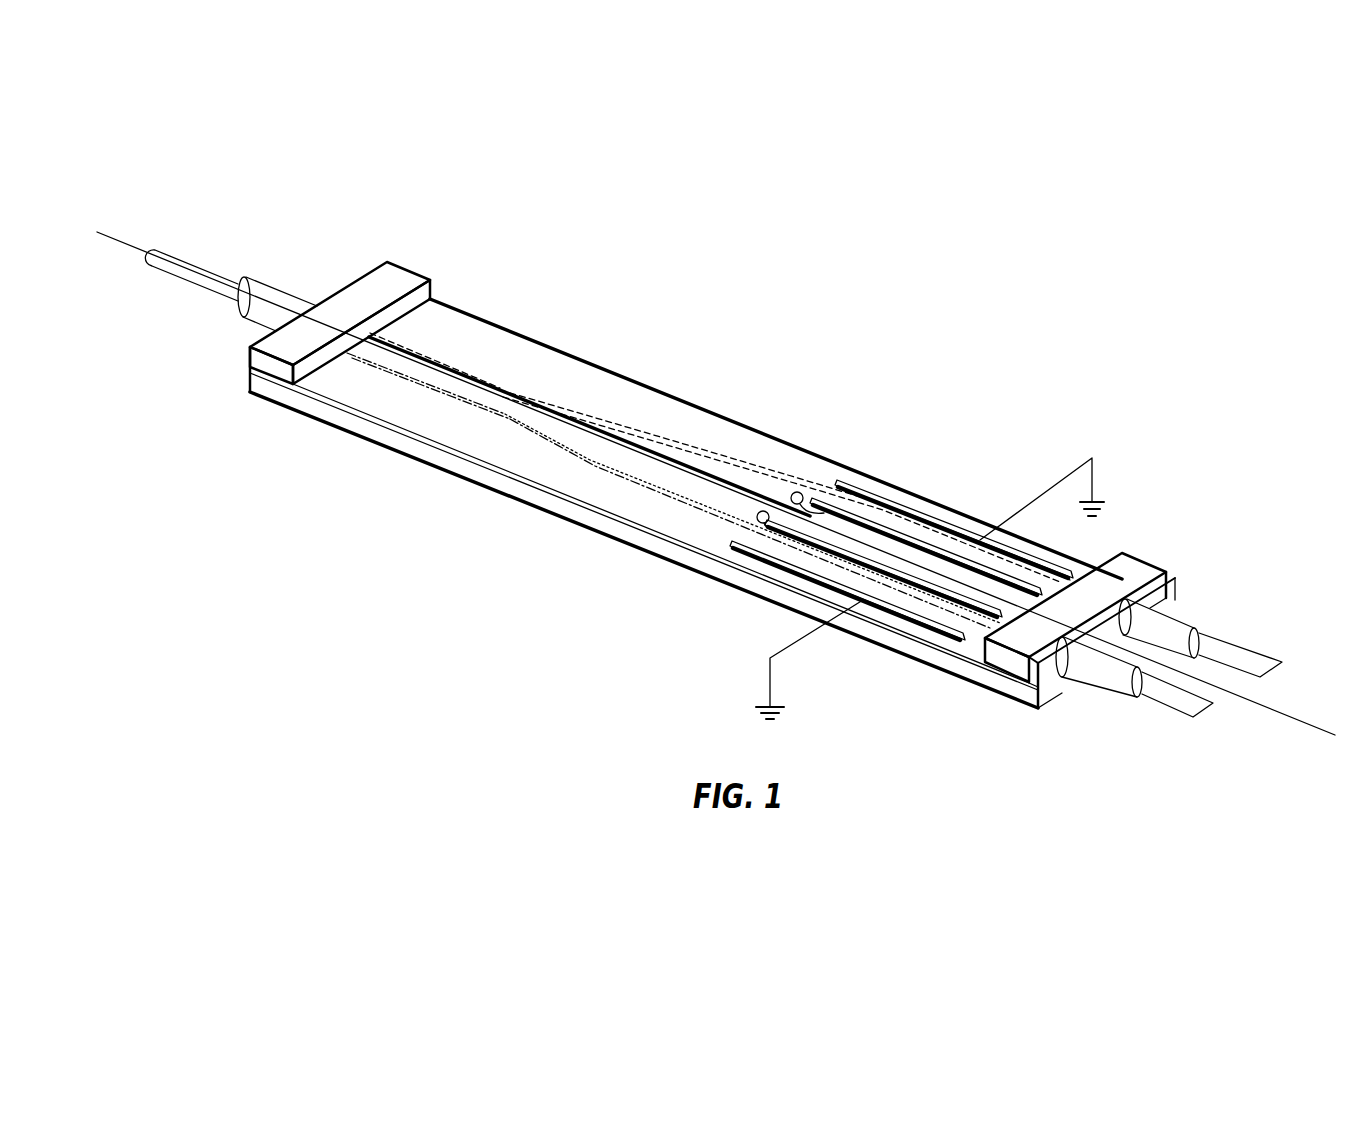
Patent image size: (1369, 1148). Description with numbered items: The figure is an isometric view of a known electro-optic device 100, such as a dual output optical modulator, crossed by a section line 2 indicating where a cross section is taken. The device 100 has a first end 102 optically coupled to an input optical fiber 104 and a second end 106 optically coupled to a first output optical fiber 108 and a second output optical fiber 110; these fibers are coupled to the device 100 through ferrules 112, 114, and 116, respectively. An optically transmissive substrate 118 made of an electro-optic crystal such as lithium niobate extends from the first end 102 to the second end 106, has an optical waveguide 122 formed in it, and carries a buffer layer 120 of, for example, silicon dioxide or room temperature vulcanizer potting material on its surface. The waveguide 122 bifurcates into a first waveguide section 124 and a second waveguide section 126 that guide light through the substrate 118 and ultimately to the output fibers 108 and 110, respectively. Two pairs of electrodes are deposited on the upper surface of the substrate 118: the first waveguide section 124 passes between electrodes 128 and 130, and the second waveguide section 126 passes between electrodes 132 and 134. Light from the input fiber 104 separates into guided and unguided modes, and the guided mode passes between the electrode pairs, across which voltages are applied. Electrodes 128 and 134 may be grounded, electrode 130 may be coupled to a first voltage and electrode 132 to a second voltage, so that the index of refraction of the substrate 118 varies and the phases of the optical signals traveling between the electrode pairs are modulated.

The section line 2- 2 is at (117, 210).
The electro-optic device 100 is at (710, 334).
The first end 102 is at (403, 273).
The input optical fiber 104 is at (171, 256).
The second end 106 is at (1128, 564).
The first output optical fiber 108 is at (1264, 664).
The second output optical fiber 110 is at (1207, 711).
The ferrule 112 is at (264, 290).
The ferrule 114 is at (1180, 621).
The ferrule 116 is at (1093, 679).
The optically transmissive substrate 118 is at (260, 388).
The buffer layer 120 is at (250, 369).
The optical waveguide 122 is at (400, 372).
The first waveguide section 124 is at (577, 412).
The second waveguide section 126 is at (593, 460).
The electrode 128 is at (917, 512).
The electrode 130 is at (800, 511).
The electrode 132 is at (988, 617).
The electrode 134 is at (742, 550).